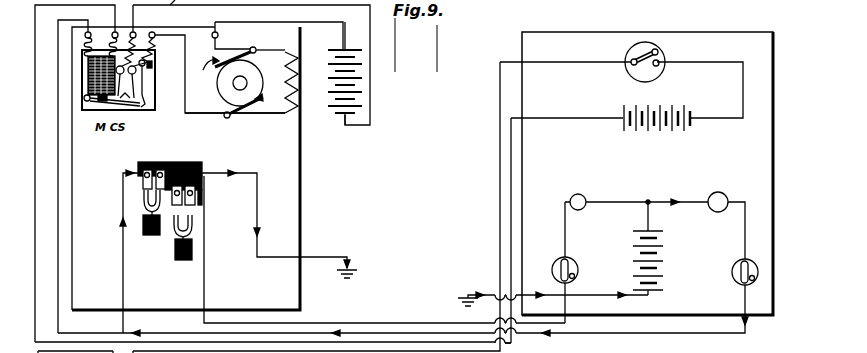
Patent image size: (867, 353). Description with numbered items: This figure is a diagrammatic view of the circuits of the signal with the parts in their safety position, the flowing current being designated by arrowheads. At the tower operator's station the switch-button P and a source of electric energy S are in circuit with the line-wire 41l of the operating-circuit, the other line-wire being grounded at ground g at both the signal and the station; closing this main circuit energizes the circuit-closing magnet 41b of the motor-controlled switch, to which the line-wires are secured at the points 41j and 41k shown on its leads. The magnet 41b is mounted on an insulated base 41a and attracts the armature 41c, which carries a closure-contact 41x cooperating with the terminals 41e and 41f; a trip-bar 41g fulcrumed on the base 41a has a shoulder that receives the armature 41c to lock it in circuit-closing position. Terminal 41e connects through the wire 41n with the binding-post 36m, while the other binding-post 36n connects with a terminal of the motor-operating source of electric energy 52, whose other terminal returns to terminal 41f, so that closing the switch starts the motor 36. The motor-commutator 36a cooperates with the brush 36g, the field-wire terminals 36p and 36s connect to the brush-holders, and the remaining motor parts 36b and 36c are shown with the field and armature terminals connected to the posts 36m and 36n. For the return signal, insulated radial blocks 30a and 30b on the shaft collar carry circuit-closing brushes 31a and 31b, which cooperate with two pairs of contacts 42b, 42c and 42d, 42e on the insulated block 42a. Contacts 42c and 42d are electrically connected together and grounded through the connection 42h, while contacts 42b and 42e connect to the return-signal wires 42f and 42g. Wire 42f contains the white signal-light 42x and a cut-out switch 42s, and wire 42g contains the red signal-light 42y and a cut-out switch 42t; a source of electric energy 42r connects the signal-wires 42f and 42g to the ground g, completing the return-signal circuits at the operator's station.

The relay terminal wire 41j is at (273, 174).
The relay terminal wire 41k is at (207, 166).
The line-wire 41l is at (59, 220).
The insulated base 41a is at (88, 112).
The circuit-closing magnet 41b is at (97, 75).
The armature 41c is at (108, 103).
The closure-contact 41x is at (128, 105).
The switch terminal 41e is at (143, 77).
The switch terminal 41f is at (147, 88).
The trip-bar 41g is at (160, 99).
The wire 41n is at (186, 110).
The motor 36 is at (227, 81).
The motor-commutator 36a is at (238, 86).
The resistor 36b is at (298, 63).
The motor shaft 36c is at (222, 92).
The brush 36g is at (256, 99).
The binding-post 36m is at (233, 116).
The binding-post 36n is at (247, 59).
The field-wire terminal 36p is at (265, 49).
The field-wire terminal 36s is at (275, 116).
The motor-operating source of electric energy 52 is at (355, 90).
The insulated block 42a is at (183, 163).
The contact 42b is at (143, 181).
The contact 42c is at (147, 192).
The contact 42d is at (185, 206).
The contact 42e is at (203, 203).
The return-signal wire 42f is at (123, 279).
The return-signal wire 42g is at (205, 286).
The grounded connection 42h is at (258, 224).
The circuit-closing brush 31a is at (193, 231).
The circuit-closing brush 31b is at (147, 204).
The insulated radial block 30a is at (182, 261).
The insulated radial block 30b is at (147, 236).
The red signal-light 42y is at (579, 194).
The white signal-light 42x is at (721, 218).
The cut-out switch 42t is at (578, 268).
The cut-out switch 42s is at (736, 276).
The source of electric energy 42r is at (658, 260).
The switch-button P is at (667, 50).
The source of electric energy S is at (662, 110).
The ground g is at (492, 292).